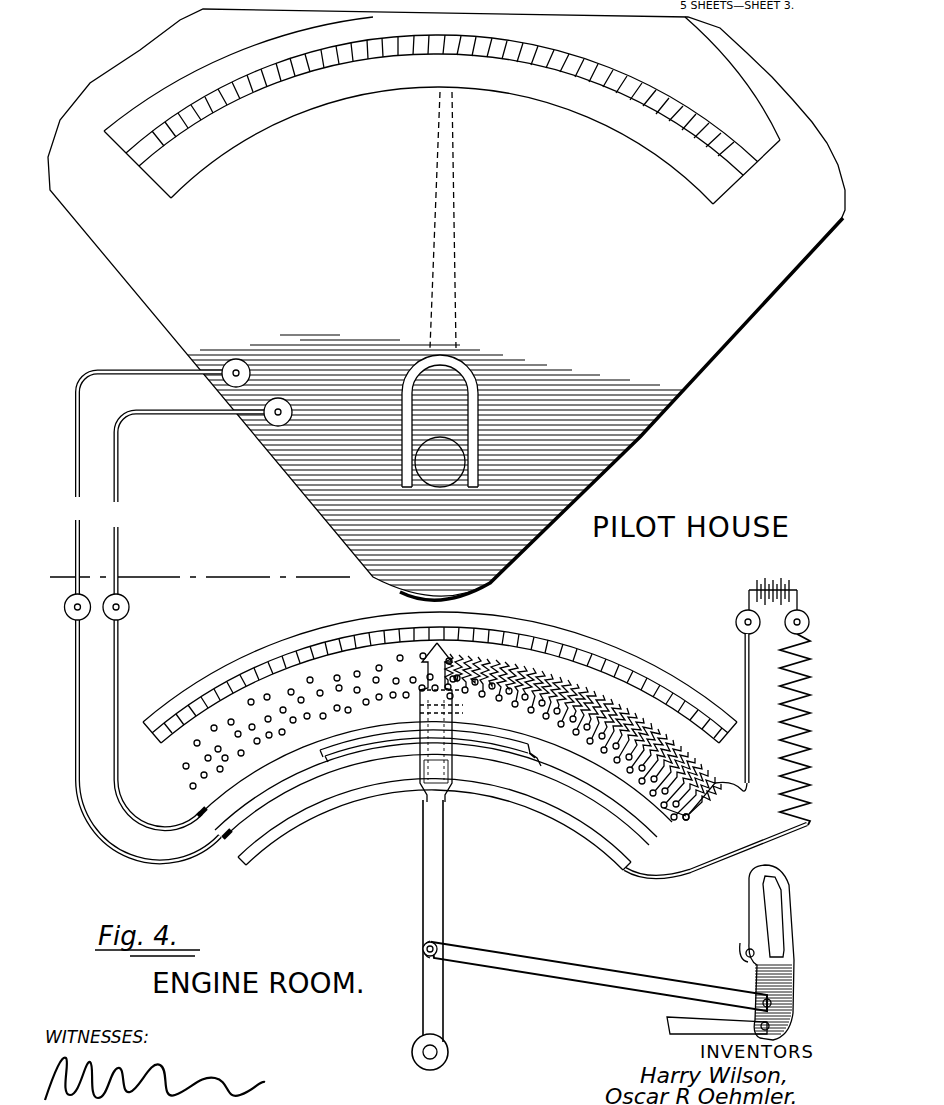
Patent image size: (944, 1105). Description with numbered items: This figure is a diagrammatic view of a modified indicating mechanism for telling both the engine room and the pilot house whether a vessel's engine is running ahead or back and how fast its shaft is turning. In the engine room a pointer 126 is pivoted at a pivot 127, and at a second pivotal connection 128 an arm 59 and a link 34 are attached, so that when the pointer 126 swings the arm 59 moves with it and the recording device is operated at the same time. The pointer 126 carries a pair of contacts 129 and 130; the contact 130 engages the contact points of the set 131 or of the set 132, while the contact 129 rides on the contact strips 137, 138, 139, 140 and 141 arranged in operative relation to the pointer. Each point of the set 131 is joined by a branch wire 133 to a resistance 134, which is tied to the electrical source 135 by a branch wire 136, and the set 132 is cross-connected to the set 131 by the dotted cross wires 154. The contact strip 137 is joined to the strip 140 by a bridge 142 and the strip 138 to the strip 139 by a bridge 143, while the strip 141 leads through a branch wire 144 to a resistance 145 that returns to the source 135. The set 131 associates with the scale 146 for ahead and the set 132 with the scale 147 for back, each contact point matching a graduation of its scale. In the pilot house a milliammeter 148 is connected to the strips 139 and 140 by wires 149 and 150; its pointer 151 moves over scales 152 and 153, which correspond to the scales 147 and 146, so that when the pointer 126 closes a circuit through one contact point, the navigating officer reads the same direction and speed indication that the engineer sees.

The lever 34 is at (570, 965).
The arm 59 is at (424, 945).
The pointer 126 is at (434, 881).
The pivot 127 is at (440, 1051).
The pivotal connection 128 is at (420, 956).
The contact 129 is at (430, 770).
The contact 130 is at (690, 816).
The set of contact points 131 is at (687, 821).
The set of contact points 132 is at (305, 716).
The branch wire 133 is at (413, 697).
The resistance 134 is at (718, 784).
The electrical source 135 is at (754, 581).
The branch wire 136 is at (742, 652).
The contact strip 137 is at (578, 806).
The contact strip 138 is at (613, 830).
The contact strip 139 is at (258, 770).
The contact strip 140 is at (297, 786).
The contact strip 141 is at (496, 793).
The bridge 142 is at (360, 753).
The bridge 143 is at (380, 732).
The branch wire 144 is at (688, 874).
The resistance 145 is at (809, 729).
The scale 146 is at (710, 592).
The scale 147 is at (293, 647).
The milliammeter 148 is at (445, 304).
The wire 149 is at (120, 571).
The wire 150 is at (82, 546).
The pointer 151 is at (440, 258).
The scale 152 is at (200, 85).
The scale 153 is at (703, 92).
The cross wires 154 is at (418, 690).